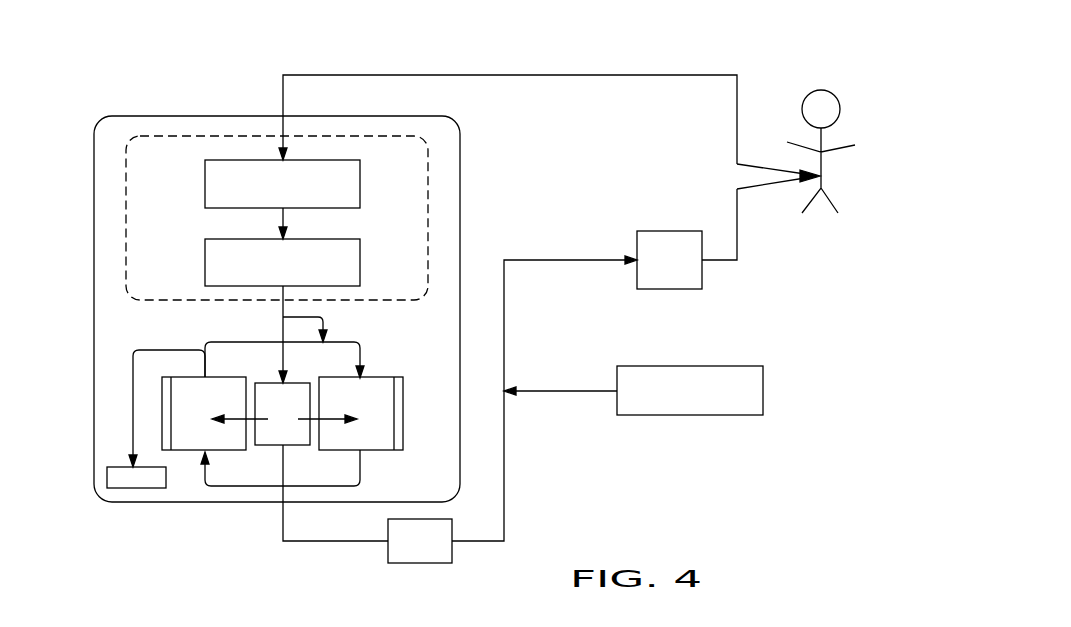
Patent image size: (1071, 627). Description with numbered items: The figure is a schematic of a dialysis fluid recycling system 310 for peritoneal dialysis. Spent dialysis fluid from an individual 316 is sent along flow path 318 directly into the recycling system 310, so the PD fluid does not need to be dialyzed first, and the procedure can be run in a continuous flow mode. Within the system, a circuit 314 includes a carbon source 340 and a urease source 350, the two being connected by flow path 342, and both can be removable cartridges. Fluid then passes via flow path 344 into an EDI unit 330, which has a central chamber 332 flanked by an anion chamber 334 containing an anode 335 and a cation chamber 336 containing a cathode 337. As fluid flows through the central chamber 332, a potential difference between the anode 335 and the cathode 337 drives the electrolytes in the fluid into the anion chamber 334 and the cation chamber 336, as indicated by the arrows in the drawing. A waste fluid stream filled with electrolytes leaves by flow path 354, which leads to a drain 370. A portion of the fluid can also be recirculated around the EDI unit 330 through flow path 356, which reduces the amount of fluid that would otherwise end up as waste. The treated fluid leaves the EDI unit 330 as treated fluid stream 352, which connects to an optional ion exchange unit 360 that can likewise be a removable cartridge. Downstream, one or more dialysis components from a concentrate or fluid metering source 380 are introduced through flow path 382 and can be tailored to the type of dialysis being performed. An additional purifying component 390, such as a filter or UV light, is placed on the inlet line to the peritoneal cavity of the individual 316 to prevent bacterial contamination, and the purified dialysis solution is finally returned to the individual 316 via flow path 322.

The dialysis fluid recycling system 310 is at (243, 68).
The circuit 314 is at (478, 168).
The individual 316 is at (837, 98).
The flow path 318 is at (340, 75).
The flow path 322 is at (740, 223).
The EDI unit 330 is at (148, 430).
The central chamber 332 is at (267, 437).
The anion chamber 334 is at (183, 388).
The anode 335 is at (167, 408).
The cation chamber 336 is at (383, 445).
The cathode 337 is at (400, 405).
The carbon source 340 is at (205, 192).
The flow path 342 is at (283, 213).
The flow path 344 is at (283, 322).
The urease source 350 is at (205, 252).
The flow path 352 is at (315, 543).
The flow path 354 is at (133, 380).
The flow path 356 is at (353, 342).
The ion exchange unit 360 is at (387, 552).
The drain 370 is at (115, 480).
The concentrate or fluid metering source 380 is at (670, 417).
The flow path 382 is at (560, 393).
The purifying component 390 is at (702, 273).